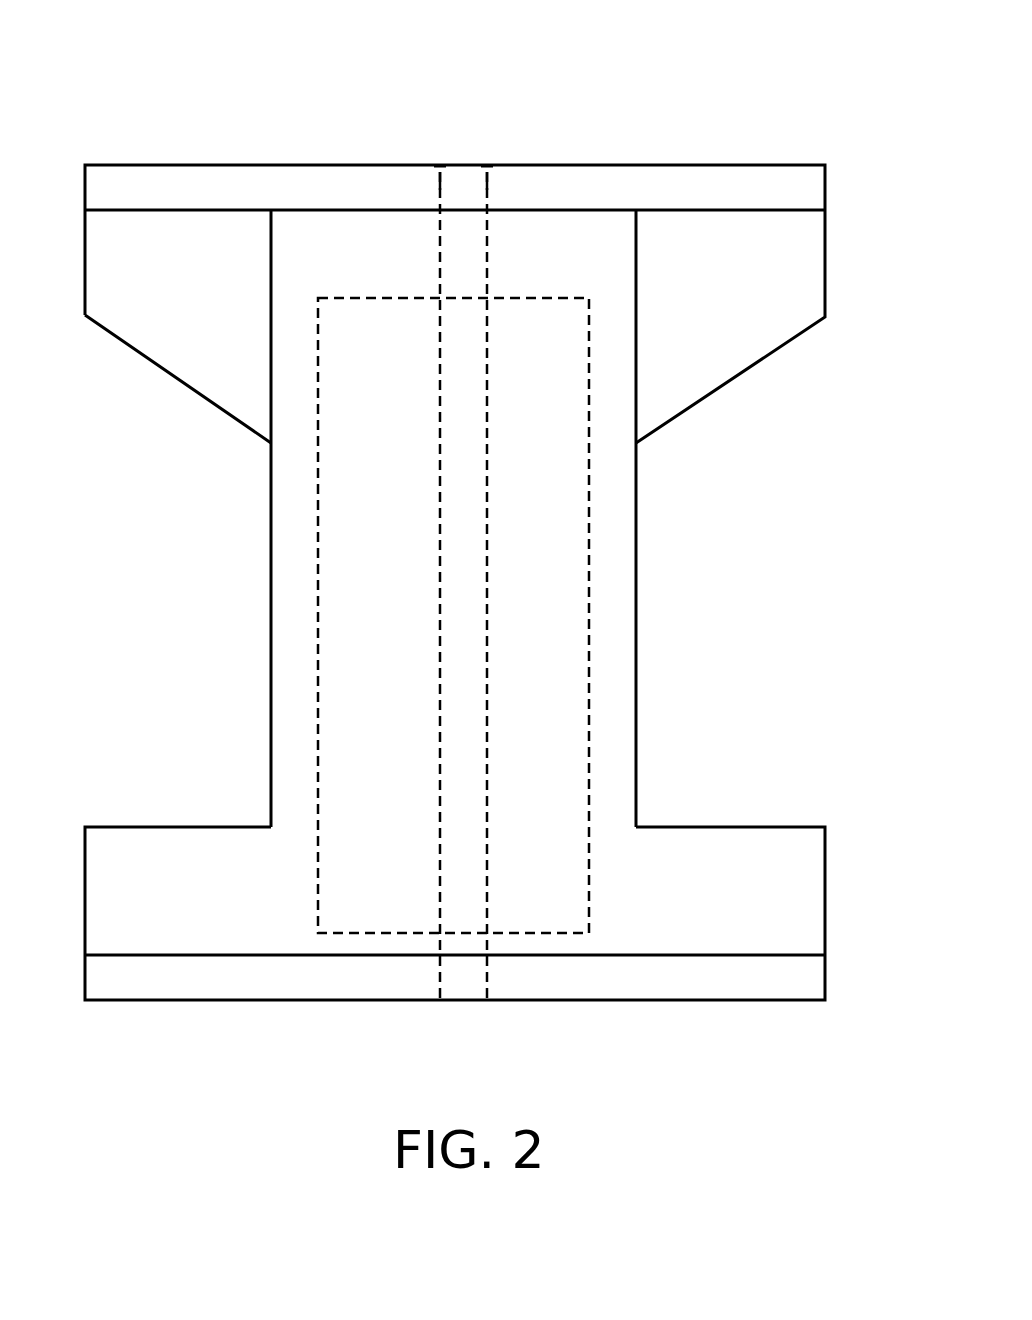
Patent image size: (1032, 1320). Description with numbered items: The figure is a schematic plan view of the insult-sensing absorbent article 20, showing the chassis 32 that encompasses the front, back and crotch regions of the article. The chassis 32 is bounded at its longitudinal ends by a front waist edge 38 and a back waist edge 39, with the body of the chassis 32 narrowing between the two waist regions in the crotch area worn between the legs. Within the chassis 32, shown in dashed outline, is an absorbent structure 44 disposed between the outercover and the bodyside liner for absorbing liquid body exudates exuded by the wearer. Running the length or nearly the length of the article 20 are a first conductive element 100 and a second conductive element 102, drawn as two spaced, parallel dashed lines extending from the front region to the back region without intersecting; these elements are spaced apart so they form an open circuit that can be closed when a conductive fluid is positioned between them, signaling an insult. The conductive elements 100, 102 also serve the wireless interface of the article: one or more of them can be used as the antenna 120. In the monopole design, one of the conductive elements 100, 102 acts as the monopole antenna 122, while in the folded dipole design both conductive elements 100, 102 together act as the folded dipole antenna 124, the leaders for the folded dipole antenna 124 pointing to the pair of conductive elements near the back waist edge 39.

The insult-sensing absorbent article 20 is at (670, 82).
The chassis 32 is at (636, 548).
The back waist edge 39 is at (783, 165).
The front waist edge 38 is at (695, 1000).
The absorbent structure 44 is at (590, 696).
The first conductive element 100 is at (440, 912).
The second conductive element 102 is at (490, 912).
The antenna 120 is at (435, 122).
The monopole antenna 122 is at (494, 116).
The folded dipole antenna 124 is at (438, 183).